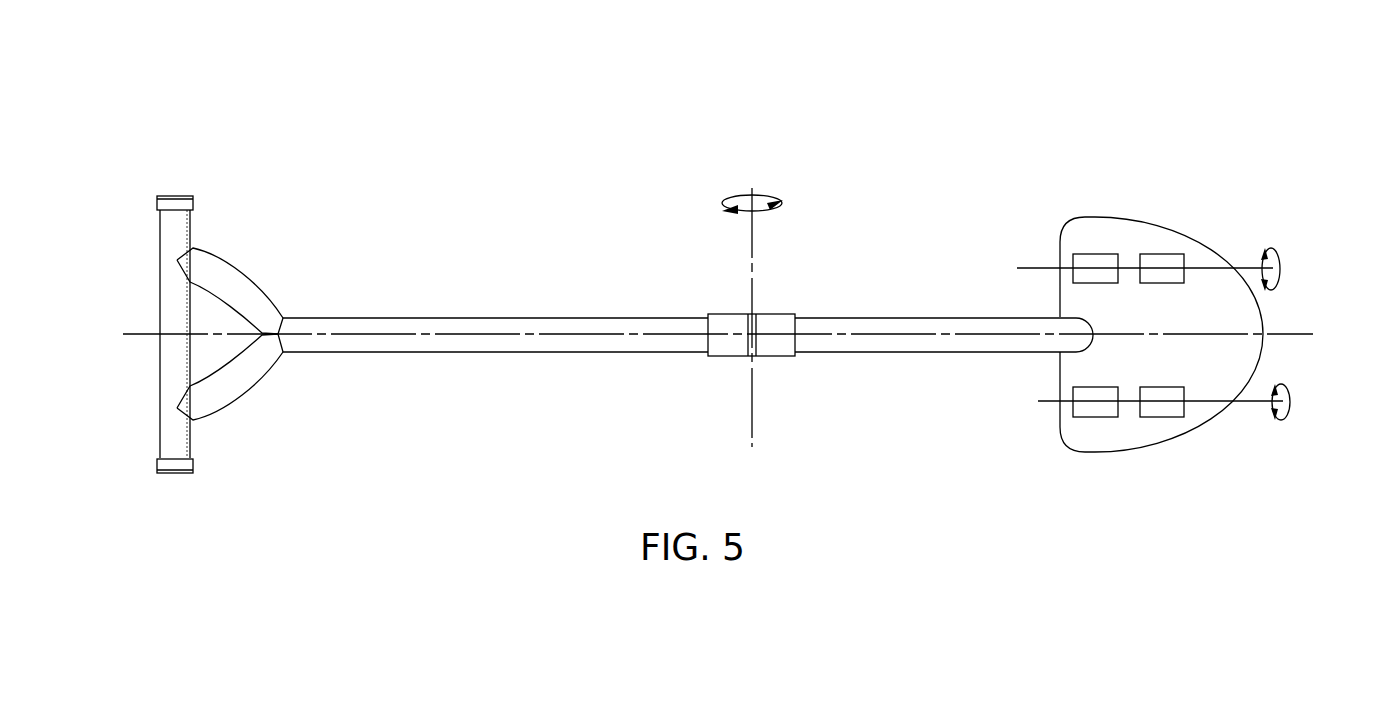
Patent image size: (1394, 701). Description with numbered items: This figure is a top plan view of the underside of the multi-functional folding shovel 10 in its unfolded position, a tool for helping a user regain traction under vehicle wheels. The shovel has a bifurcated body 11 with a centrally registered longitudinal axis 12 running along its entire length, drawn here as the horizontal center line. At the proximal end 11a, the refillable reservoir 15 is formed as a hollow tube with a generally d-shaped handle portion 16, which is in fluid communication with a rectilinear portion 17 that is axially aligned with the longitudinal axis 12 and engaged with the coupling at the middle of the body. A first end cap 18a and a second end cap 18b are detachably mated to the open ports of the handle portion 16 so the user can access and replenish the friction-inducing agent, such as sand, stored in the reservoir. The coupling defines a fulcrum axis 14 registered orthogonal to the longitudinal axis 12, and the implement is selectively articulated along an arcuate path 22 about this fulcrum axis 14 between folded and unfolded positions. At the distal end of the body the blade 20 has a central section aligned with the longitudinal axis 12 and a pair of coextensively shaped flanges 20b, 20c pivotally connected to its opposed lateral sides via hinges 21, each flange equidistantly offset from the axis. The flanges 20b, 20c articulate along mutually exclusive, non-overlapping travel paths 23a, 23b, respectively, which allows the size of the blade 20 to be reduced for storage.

The multi-functional folding shovel 10 is at (433, 135).
The bifurcated body 11 is at (435, 378).
The proximal end 11a is at (150, 316).
The centrally registered longitudinal axis 12 is at (900, 338).
The fulcrum axis 14 is at (752, 438).
The refillable reservoir 15 is at (518, 278).
The handle portion 16 is at (240, 393).
The rectilinear portion 17 is at (525, 352).
The first end cap 18a is at (182, 202).
The second end cap 18b is at (187, 471).
The blade 20 is at (1243, 322).
The coextensively shaped flange 20b is at (1148, 442).
The coextensively shaped flange 20c is at (1117, 222).
The hinges 21 is at (1093, 258).
The arcuate path 22 is at (765, 192).
The travel path 23a is at (1290, 402).
The travel path 23b is at (1280, 268).